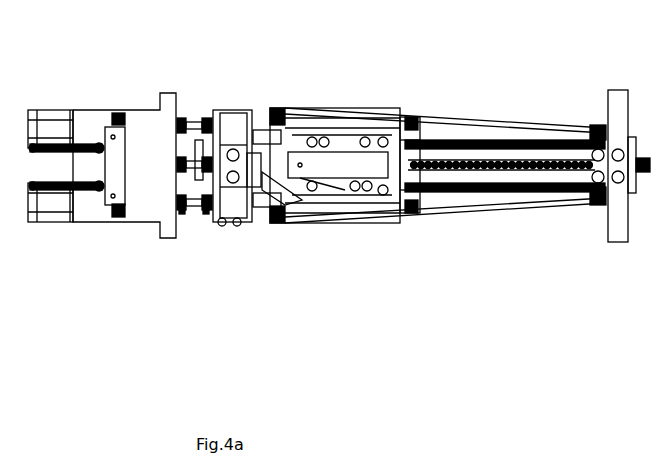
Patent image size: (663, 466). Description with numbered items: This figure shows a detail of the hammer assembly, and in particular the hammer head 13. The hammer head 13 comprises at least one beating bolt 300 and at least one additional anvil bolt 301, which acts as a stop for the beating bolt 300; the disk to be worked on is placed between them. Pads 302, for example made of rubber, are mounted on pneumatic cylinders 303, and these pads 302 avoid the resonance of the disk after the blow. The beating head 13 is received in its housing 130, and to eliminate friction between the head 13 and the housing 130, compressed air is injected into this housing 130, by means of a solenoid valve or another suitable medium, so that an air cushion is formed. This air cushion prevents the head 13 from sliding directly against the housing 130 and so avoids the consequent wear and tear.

The anvil bolt 301 is at (115, 143).
The beating bolt 300 is at (238, 135).
The pads 302 is at (226, 269).
The pneumatic cylinders 303 is at (227, 220).
The hammer head 13 is at (300, 200).
The housing 130 is at (408, 117).